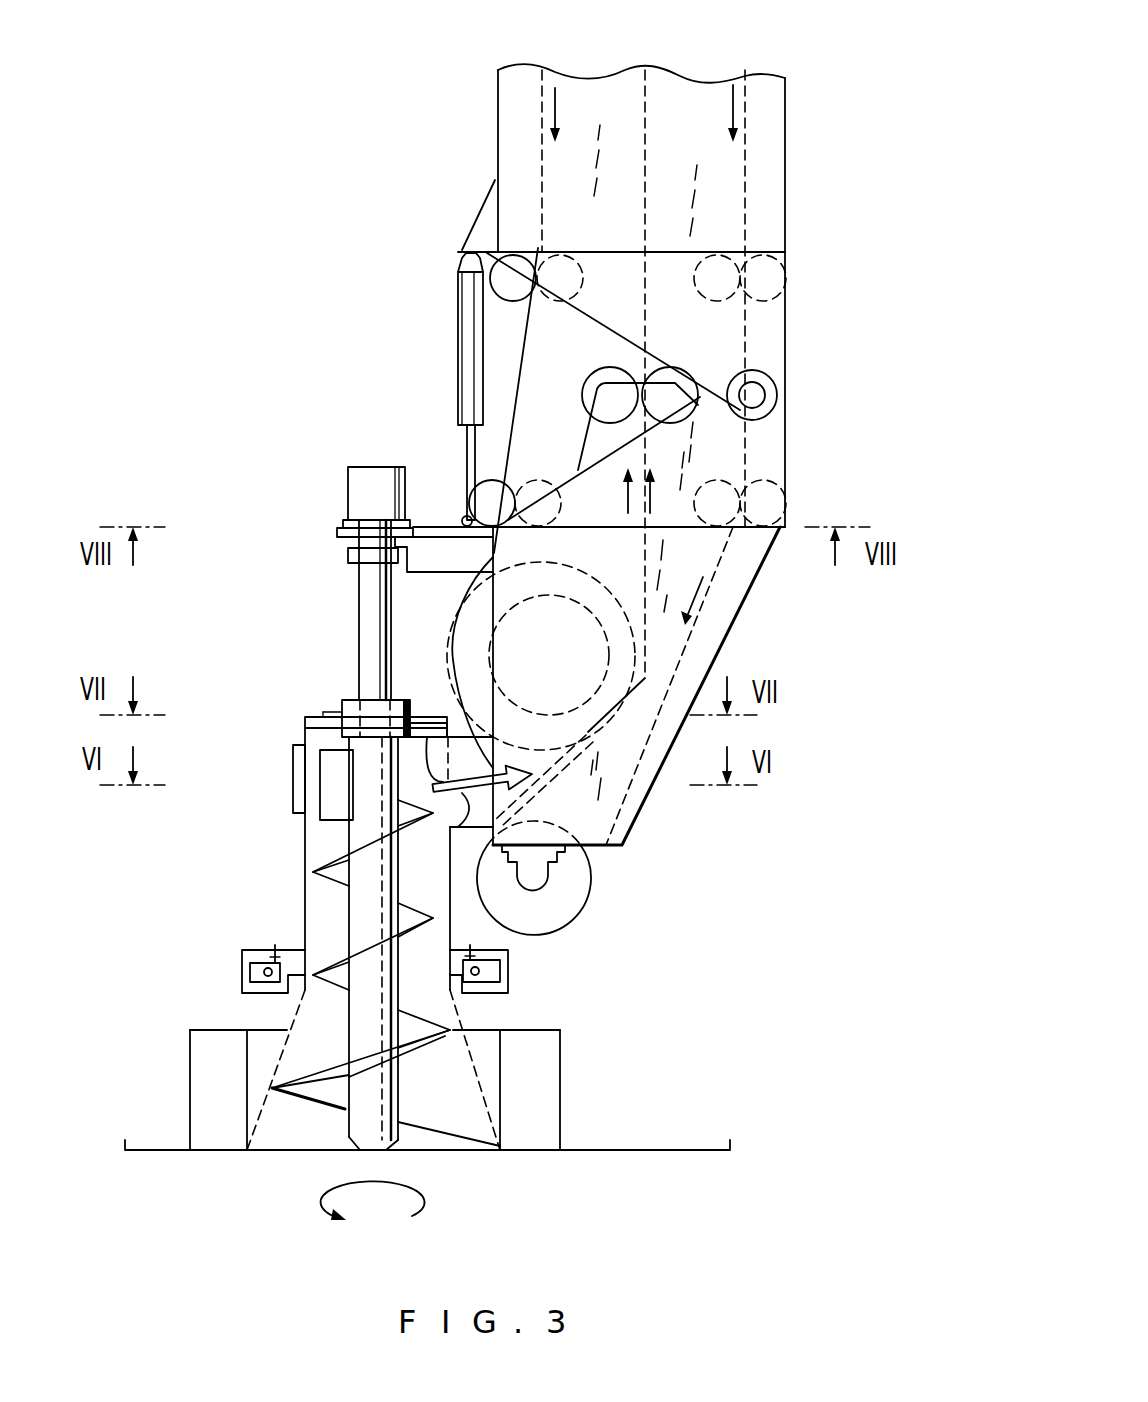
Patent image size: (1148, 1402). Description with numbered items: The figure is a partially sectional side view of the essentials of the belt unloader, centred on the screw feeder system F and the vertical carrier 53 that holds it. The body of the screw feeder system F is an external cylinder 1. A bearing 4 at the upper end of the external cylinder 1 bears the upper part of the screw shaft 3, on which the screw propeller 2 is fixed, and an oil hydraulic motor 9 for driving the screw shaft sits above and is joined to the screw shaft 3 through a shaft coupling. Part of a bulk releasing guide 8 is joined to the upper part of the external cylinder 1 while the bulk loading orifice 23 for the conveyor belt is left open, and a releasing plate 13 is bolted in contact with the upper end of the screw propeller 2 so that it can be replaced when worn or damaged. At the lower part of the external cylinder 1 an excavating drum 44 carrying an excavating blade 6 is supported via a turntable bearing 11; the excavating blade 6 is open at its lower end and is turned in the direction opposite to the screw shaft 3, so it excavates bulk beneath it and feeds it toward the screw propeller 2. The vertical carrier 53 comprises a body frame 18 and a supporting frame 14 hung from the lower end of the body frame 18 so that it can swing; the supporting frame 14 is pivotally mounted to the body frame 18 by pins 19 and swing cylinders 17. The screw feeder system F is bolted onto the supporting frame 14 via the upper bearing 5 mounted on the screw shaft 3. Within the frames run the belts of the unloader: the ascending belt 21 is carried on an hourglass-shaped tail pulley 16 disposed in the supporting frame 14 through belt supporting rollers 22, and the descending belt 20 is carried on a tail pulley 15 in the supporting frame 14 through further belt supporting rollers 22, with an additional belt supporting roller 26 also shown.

The external cylinder 1 is at (305, 845).
The screw propeller 2 is at (310, 1100).
The screw shaft 3 is at (400, 1097).
The bearing 4 is at (340, 707).
The upper bearing 5 is at (348, 554).
The excavating blade 6 is at (560, 1095).
The bulk releasing guide 8 is at (472, 750).
The oil hydraulic motor for driving the screw shaft 9 is at (372, 467).
The turntable bearing 11 is at (252, 968).
The releasing plate 13 is at (322, 798).
The supporting frame 14 is at (653, 782).
The tail pulley 15 is at (590, 893).
The hourglass-shaped tail pulley 16 is at (637, 682).
The swing cylinder 17 is at (458, 322).
The body frame 18 is at (787, 112).
The pin 19 is at (757, 395).
The descending belt 20 is at (746, 178).
The ascending belt 21 is at (540, 152).
The belt supporting rollers 22 is at (462, 248).
The bulk loading orifice 23 is at (325, 747).
The belt supporting roller 26 is at (692, 370).
The excavating drum 44 is at (545, 1030).
The vertical carrier 53 is at (803, 76).
The screw feeder system F is at (290, 682).